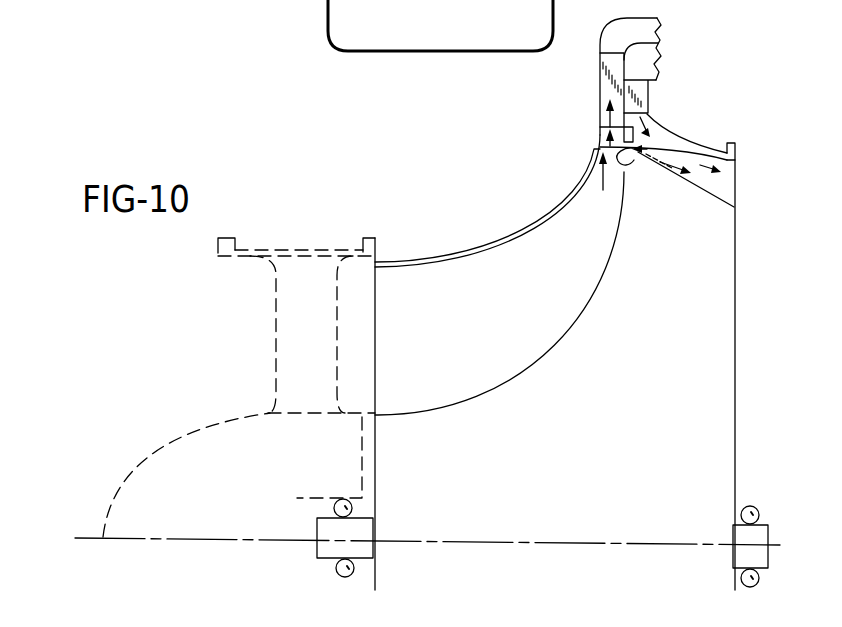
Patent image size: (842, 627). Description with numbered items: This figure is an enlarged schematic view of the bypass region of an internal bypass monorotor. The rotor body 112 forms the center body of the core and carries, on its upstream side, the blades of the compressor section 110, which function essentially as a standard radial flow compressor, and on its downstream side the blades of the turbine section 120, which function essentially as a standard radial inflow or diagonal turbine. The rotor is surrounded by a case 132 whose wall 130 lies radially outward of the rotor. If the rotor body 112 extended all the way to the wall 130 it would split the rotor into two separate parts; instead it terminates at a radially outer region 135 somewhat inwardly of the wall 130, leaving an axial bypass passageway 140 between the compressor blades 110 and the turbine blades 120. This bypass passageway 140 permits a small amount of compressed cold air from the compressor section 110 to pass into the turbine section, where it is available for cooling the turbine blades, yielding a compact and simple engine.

The compressor section blades 110 is at (563, 292).
The rotor body 112 is at (597, 514).
The turbine section blades 120 is at (697, 163).
The wall 130 is at (630, 134).
The case 132 is at (578, 184).
The radially outer region 135 is at (637, 172).
The axial bypass passageway 140 is at (634, 160).